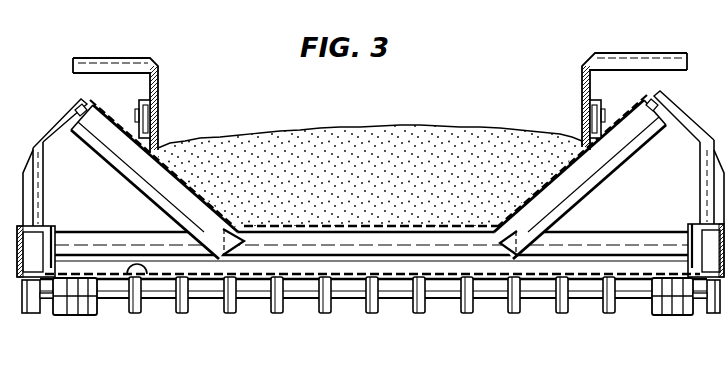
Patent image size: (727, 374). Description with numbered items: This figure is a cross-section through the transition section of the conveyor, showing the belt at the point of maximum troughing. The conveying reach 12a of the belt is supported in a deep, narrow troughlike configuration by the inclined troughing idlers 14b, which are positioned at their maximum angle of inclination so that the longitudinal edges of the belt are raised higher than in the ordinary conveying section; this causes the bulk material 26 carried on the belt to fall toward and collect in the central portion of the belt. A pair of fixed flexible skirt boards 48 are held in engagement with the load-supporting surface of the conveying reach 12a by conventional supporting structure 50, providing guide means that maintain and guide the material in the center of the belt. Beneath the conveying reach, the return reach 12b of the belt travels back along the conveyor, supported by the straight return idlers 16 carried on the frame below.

The conveying reach 12a is at (576, 200).
The return reach 12b is at (128, 278).
The troughing idlers 14b is at (125, 174).
The straight return idlers 16 is at (73, 316).
The bulk material load on belt 26 is at (462, 127).
The fixed flexible skirt boards 48 is at (159, 147).
The supporting structure 50 is at (169, 58).